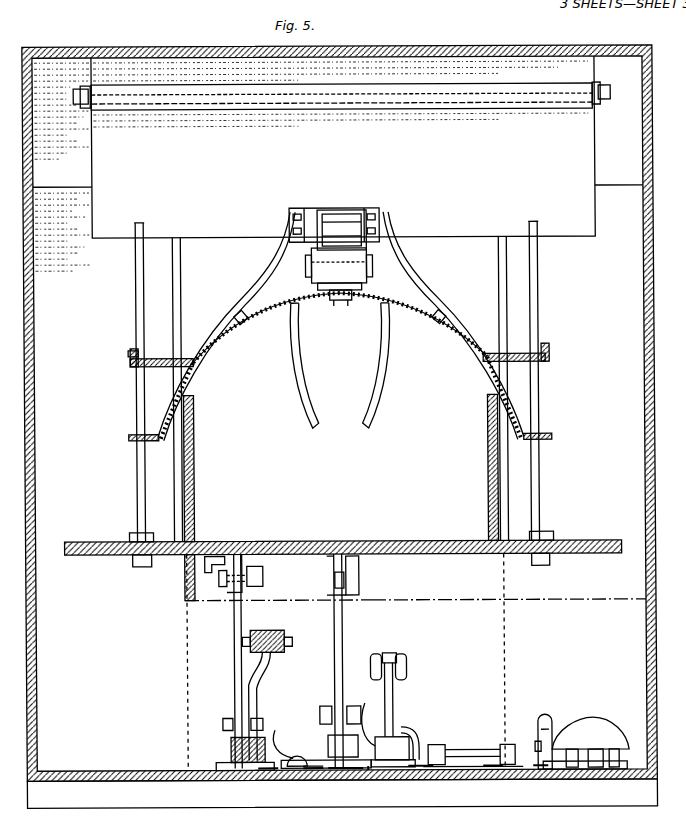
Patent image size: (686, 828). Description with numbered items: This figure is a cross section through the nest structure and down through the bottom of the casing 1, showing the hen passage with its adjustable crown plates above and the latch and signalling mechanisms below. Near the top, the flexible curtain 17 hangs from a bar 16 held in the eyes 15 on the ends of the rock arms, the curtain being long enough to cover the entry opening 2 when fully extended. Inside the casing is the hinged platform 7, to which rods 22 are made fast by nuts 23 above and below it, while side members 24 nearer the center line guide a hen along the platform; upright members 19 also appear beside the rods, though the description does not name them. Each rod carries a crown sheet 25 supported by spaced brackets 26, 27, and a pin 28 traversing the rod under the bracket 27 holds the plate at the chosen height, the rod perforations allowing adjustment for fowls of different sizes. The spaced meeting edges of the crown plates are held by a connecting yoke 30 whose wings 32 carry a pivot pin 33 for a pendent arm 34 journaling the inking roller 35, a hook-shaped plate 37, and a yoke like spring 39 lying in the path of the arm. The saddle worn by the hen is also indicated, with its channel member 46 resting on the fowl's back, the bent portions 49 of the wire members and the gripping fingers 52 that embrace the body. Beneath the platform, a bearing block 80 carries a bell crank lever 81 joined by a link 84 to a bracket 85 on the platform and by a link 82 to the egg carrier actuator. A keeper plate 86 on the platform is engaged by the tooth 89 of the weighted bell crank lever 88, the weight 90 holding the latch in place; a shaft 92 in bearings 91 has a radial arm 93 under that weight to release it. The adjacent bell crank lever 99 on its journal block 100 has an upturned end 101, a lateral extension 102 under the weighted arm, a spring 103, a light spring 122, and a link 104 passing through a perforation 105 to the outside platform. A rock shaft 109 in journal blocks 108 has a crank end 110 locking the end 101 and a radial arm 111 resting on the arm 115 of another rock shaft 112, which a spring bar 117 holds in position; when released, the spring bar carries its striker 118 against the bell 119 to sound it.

The casing 1 is at (654, 150).
The opening 2 is at (317, 471).
The platform 7 is at (412, 541).
The eyes 15 is at (80, 104).
The bar 16 is at (556, 103).
The flexible curtain 17 is at (337, 147).
The guide rod 19 is at (180, 272).
The rods 22 is at (136, 300).
The nuts 23 is at (128, 536).
The side members 24 is at (194, 468).
The crown sheet 25 is at (210, 345).
The bracket 26 is at (130, 352).
The bracket 27 is at (128, 437).
The pin 28 is at (130, 445).
The connecting yoke 30 is at (372, 262).
The wings 32 is at (300, 210).
The pivot pin 33 is at (378, 220).
The pendent arm 34 is at (372, 268).
The roller 35 is at (320, 270).
The hook-shaped plate 37 is at (362, 286).
The yoke like spring 39 is at (343, 210).
The channel member 46 is at (340, 302).
The bent portions 49 is at (248, 318).
The gripping fingers 52 is at (366, 397).
The bearing block 80 is at (228, 750).
The bell crank lever 81 is at (254, 695).
The link 82 is at (267, 632).
The link 84 is at (232, 620).
The bracket 85 is at (217, 586).
The keeper plate 86 is at (357, 580).
The bell crank lever 88 is at (332, 620).
The tooth 89 is at (333, 578).
The weight 90 is at (325, 745).
The bearings 91 is at (282, 731).
The shaft 92 is at (262, 785).
The radial arm 93 is at (305, 755).
The bell crank lever 99 is at (390, 692).
The journal block 100 is at (414, 712).
The upturned end 101 is at (393, 752).
The lateral extension 102 is at (316, 785).
The spring 103 is at (415, 785).
The link 104 is at (395, 656).
The perforation 105 is at (372, 654).
The journal blocks 108 is at (436, 746).
The rock shaft 109 is at (478, 748).
The crank end 110 is at (367, 714).
The radial arm 111 is at (536, 785).
The rock shaft 112 is at (372, 785).
The arm 115 is at (490, 785).
The spring bar 117 is at (552, 738).
The striker 118 is at (546, 716).
The bell 119 is at (604, 722).
The light spring 122 is at (345, 785).